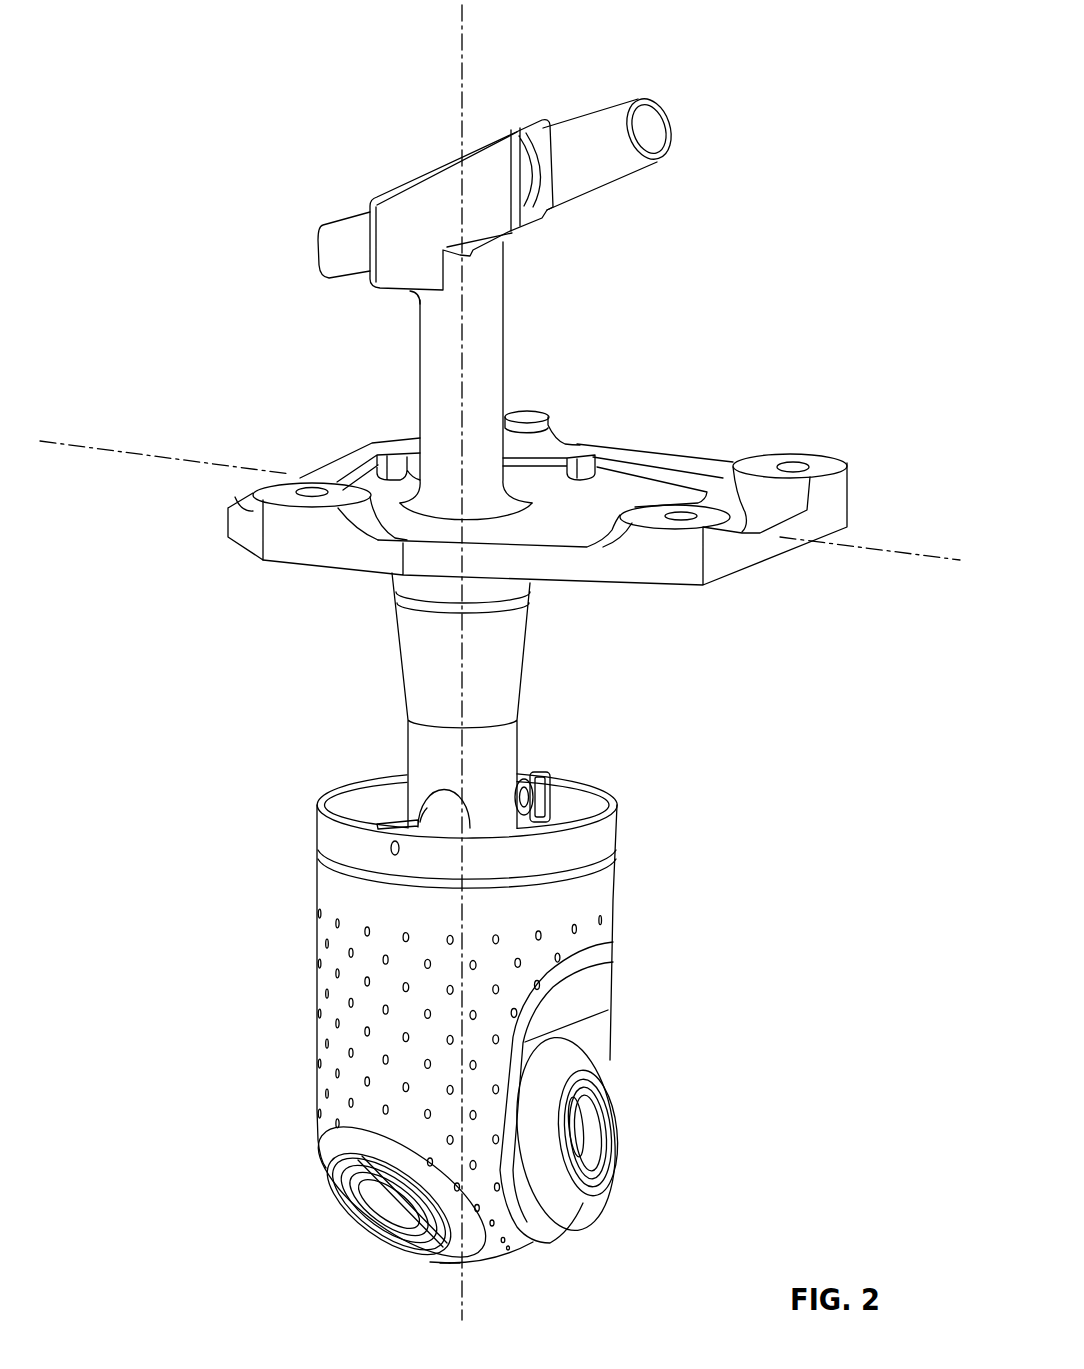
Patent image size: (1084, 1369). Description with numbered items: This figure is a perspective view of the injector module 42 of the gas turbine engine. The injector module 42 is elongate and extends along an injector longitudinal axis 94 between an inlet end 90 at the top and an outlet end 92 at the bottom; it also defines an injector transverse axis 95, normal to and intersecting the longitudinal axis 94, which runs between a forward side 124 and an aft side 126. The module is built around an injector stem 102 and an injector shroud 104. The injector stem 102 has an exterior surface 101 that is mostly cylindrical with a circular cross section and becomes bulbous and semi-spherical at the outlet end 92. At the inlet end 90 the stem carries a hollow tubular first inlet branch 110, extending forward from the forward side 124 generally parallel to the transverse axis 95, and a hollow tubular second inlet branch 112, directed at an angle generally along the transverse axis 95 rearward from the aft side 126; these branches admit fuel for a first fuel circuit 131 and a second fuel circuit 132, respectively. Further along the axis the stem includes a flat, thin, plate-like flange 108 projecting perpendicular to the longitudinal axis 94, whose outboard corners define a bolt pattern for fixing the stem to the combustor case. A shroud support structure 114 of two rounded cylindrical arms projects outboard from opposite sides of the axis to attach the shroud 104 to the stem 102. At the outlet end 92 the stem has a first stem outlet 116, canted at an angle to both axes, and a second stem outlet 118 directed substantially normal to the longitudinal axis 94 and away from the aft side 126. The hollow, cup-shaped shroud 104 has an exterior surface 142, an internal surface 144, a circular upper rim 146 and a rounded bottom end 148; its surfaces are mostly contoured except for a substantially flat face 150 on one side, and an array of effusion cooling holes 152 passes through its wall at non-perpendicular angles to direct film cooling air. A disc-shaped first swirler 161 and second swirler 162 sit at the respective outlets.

The injector module 42 is at (352, 30).
The inlet end 90 is at (470, 162).
The outlet end 92 is at (447, 1262).
The injector longitudinal axis 94 is at (463, 1279).
The injector transverse axis 95 is at (500, 500).
The exterior surface 101 is at (488, 344).
The injector stem 102 is at (537, 492).
The injector shroud 104 is at (465, 960).
The flange 108 is at (630, 497).
The first inlet branch 110 is at (275, 205).
The second inlet branch 112 is at (648, 111).
The shroud support structure 114 is at (395, 798).
The first stem outlet 116 is at (375, 1222).
The second stem outlet 118 is at (600, 1140).
The forward side 124 is at (300, 472).
The aft side 126 is at (730, 563).
The first fuel circuit 131 is at (306, 254).
The second fuel circuit 132 is at (652, 125).
The exterior surface 142 is at (617, 890).
The internal surface 144 is at (568, 790).
The upper rim 146 is at (613, 802).
The bottom end 148 is at (537, 1246).
The flat face 150 is at (593, 1027).
The effusion cooling holes 152 is at (338, 1023).
The first swirler 161 is at (330, 1140).
The second swirler 162 is at (580, 1060).